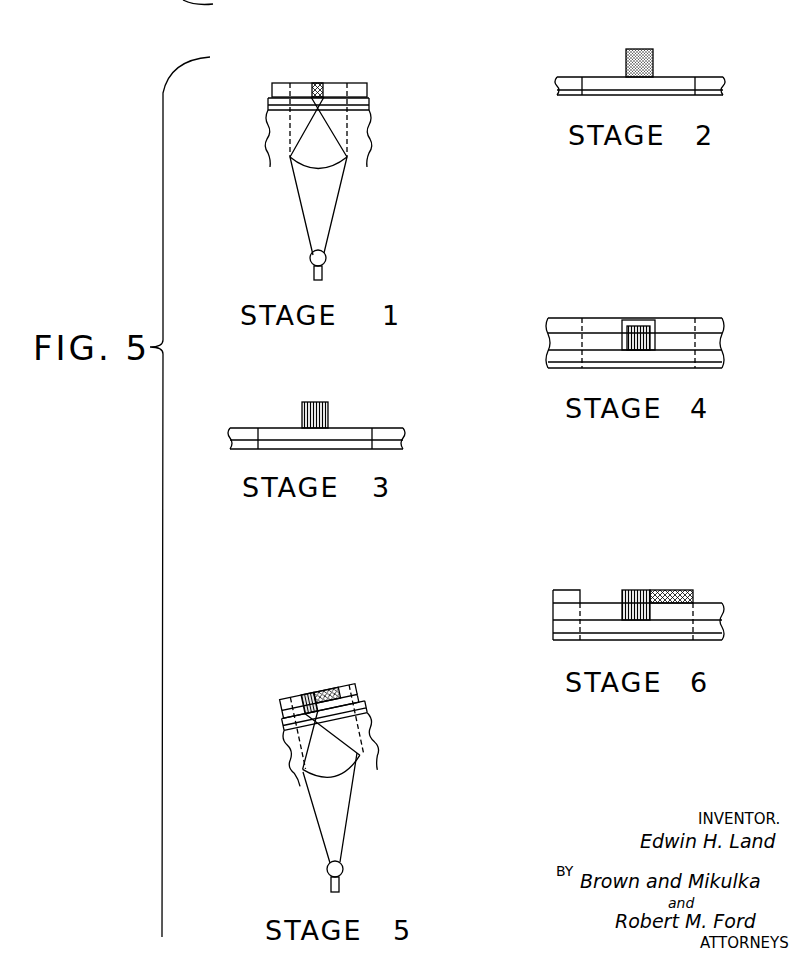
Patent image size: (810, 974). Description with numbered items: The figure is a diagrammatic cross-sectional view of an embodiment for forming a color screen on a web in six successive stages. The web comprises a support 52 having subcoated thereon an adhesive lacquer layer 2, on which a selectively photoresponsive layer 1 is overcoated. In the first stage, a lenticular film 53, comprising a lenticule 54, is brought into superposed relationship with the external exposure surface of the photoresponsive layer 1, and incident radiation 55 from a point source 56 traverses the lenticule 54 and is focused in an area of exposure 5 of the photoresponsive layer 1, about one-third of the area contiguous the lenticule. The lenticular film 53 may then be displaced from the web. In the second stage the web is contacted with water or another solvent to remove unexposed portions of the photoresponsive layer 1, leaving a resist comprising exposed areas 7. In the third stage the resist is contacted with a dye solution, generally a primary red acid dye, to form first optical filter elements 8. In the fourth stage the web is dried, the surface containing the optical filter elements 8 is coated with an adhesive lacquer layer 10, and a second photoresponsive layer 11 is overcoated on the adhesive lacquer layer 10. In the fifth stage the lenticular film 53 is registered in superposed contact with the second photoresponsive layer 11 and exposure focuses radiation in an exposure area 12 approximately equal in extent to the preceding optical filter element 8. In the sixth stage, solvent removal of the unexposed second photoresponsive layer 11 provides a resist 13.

The photoresponsive layer 1 is at (367, 90).
The adhesive lacquer layer 2 is at (369, 101).
The area of exposure 5 is at (315, 90).
The exposed areas 7 is at (634, 57).
The optical filter elements 8 is at (310, 400).
The adhesive lacquer layer 10 is at (715, 343).
The second photoresponsive layer 11 is at (712, 328).
The exposure area 12 is at (331, 686).
The resist 13 is at (672, 590).
The support 52 is at (369, 108).
The lenticular film 53 is at (367, 140).
The lenticule 54 is at (292, 136).
The incident radiation 55 is at (337, 200).
The point source 56 is at (326, 258).